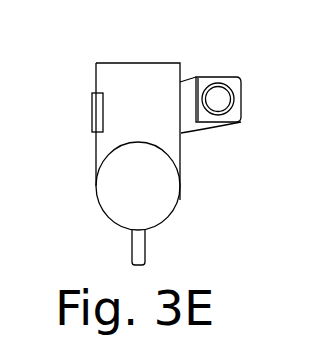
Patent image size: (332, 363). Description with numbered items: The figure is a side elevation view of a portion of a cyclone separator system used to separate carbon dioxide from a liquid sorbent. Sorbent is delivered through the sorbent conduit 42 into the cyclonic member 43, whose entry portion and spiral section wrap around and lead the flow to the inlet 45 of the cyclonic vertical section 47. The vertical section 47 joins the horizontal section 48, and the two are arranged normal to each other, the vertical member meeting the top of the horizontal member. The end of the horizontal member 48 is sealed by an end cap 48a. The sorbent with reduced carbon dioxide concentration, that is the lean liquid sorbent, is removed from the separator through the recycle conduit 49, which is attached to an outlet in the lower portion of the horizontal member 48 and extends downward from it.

The sorbent conduit 42 is at (238, 77).
The cyclonic member 43 is at (202, 67).
The inlet 45 is at (98, 114).
The cyclonic vertical section 47 is at (107, 79).
The horizontal section 48 is at (179, 207).
The end cap 48a is at (165, 182).
The recycle conduit 49 is at (138, 248).